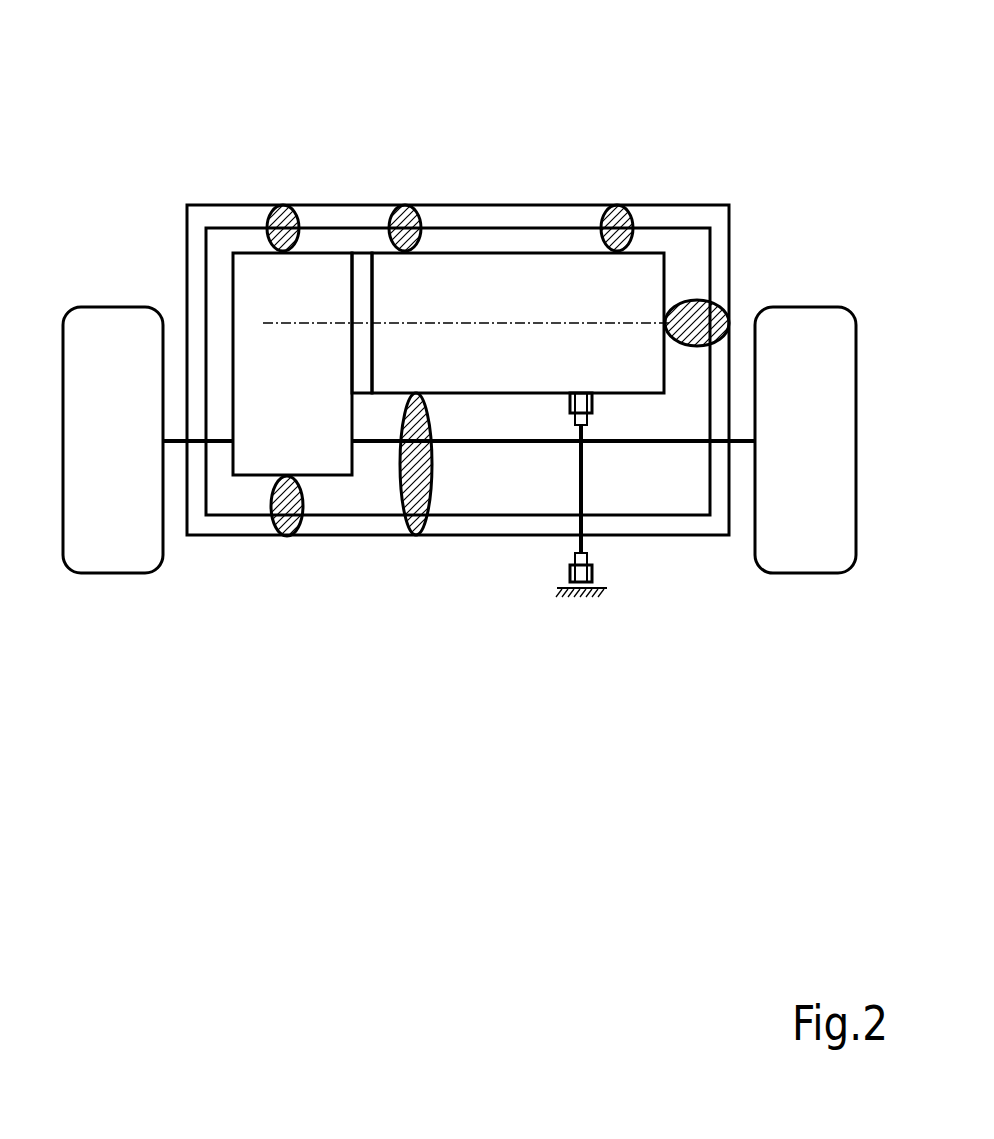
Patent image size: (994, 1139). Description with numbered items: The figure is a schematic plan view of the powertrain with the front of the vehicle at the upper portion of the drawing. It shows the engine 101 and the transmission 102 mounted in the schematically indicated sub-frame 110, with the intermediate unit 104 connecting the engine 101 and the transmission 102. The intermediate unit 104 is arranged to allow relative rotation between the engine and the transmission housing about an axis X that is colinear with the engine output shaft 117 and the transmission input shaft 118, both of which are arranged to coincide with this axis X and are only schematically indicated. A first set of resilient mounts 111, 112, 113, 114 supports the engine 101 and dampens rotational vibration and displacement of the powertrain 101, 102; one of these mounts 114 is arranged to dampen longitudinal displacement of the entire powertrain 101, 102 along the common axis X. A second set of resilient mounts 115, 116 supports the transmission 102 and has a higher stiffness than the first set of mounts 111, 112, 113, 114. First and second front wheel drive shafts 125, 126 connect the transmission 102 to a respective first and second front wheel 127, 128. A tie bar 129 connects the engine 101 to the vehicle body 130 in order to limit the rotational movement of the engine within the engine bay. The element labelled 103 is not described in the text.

The engine 101 is at (497, 241).
The transmission 102 is at (221, 294).
The electric machine 103 is at (233, 253).
The intermediate unit 104 is at (368, 393).
The sub-frame 110 is at (612, 536).
The resilient mount 111 is at (613, 206).
The resilient mount 112 is at (405, 206).
The resilient mount 113 is at (416, 537).
The resilient mount 114 is at (720, 306).
The resilient mount 115 is at (290, 206).
The resilient mount 116 is at (287, 537).
The engine output shaft 117 is at (531, 305).
The transmission input shaft 118 is at (316, 311).
The first front wheel drive shaft 125 is at (655, 443).
The second front wheel drive shaft 126 is at (223, 443).
The first front wheel 127 is at (802, 574).
The second front wheel 128 is at (115, 574).
The tie bar 129 is at (577, 500).
The vehicle body 130 is at (578, 601).
The axis X is at (547, 326).